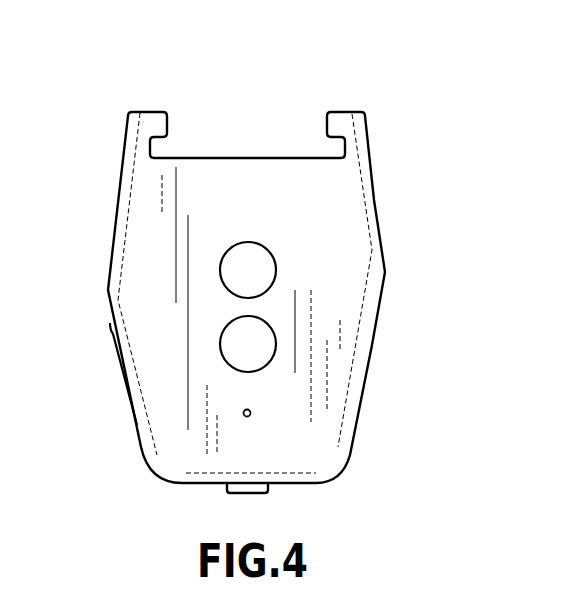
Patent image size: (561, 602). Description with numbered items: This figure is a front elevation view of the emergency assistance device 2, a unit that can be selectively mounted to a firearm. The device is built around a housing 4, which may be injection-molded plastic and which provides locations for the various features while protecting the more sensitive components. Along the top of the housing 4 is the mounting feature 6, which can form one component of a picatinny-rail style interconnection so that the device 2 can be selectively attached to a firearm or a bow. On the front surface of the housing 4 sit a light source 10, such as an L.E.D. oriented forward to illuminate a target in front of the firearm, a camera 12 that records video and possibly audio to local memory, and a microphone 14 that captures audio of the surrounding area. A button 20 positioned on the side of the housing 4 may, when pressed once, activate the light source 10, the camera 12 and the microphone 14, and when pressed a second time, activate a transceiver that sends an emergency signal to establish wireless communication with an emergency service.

The emergency assistance device 2 is at (253, 262).
The housing 4 is at (353, 213).
The mounting feature 6 is at (199, 158).
The light source 10 is at (258, 274).
The camera 12 is at (262, 343).
The microphone 14 is at (251, 416).
The button 20 is at (117, 355).